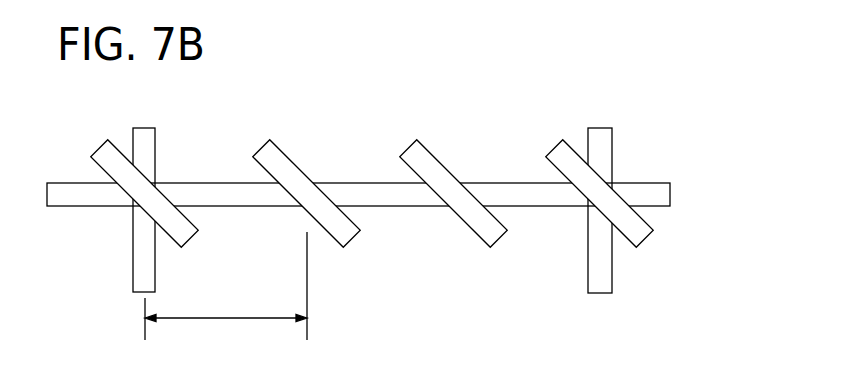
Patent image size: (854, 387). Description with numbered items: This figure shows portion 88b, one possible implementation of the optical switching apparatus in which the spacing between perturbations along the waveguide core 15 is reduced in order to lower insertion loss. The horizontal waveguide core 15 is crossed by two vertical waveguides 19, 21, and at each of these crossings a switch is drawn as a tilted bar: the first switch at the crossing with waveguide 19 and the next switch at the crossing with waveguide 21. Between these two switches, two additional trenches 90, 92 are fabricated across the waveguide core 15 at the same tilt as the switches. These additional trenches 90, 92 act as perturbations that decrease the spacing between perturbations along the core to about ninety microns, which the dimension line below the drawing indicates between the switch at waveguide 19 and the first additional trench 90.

The waveguide core 15 is at (344, 217).
The vertical waveguide 19 is at (155, 156).
The vertical waveguide 21 is at (612, 156).
The additional trench 90 is at (334, 218).
The additional trench 92 is at (480, 218).
The portion 88b is at (698, 75).